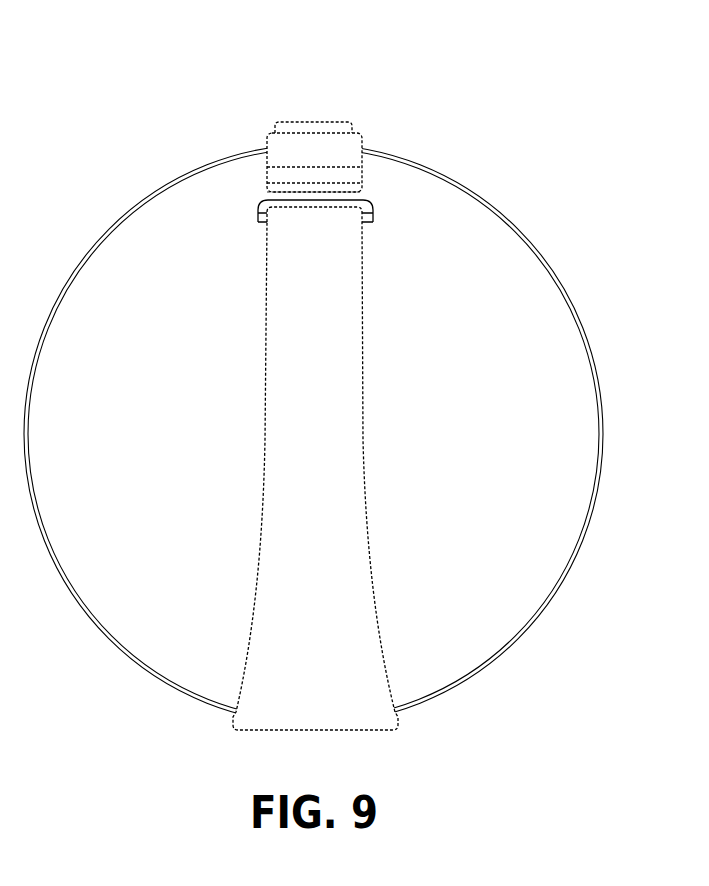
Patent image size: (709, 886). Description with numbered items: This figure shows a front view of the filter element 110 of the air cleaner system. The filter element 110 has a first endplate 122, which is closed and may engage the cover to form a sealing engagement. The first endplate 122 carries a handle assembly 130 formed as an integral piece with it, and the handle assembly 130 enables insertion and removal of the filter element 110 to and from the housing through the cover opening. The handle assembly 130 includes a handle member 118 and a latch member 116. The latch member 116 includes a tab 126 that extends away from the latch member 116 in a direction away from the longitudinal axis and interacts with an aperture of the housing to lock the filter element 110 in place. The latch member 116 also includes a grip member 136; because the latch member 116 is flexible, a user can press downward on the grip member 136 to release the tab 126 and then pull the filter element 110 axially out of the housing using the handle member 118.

The filter element 110 is at (600, 107).
The latch member 116 is at (357, 135).
The tab 126 is at (272, 145).
The grip member 136 is at (348, 183).
The handle member 118 is at (355, 390).
The first endplate 122 is at (567, 528).
The handle assembly 130 is at (452, 560).